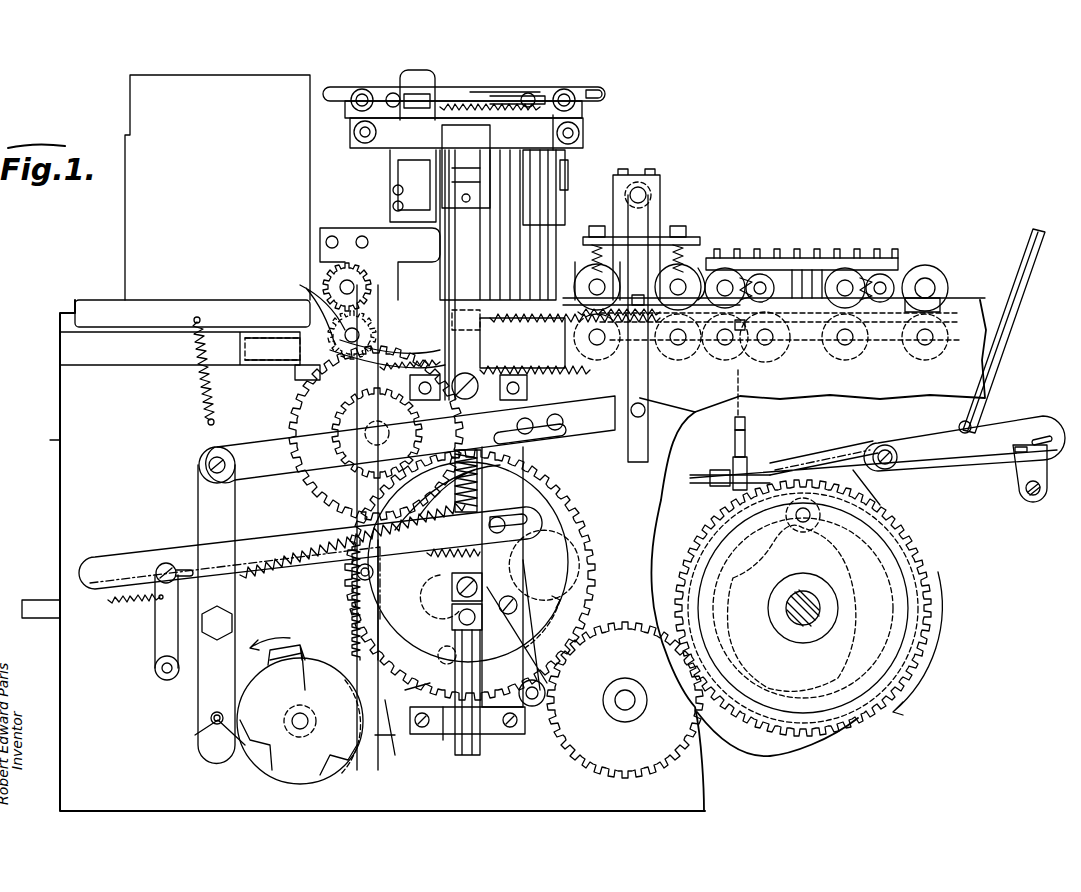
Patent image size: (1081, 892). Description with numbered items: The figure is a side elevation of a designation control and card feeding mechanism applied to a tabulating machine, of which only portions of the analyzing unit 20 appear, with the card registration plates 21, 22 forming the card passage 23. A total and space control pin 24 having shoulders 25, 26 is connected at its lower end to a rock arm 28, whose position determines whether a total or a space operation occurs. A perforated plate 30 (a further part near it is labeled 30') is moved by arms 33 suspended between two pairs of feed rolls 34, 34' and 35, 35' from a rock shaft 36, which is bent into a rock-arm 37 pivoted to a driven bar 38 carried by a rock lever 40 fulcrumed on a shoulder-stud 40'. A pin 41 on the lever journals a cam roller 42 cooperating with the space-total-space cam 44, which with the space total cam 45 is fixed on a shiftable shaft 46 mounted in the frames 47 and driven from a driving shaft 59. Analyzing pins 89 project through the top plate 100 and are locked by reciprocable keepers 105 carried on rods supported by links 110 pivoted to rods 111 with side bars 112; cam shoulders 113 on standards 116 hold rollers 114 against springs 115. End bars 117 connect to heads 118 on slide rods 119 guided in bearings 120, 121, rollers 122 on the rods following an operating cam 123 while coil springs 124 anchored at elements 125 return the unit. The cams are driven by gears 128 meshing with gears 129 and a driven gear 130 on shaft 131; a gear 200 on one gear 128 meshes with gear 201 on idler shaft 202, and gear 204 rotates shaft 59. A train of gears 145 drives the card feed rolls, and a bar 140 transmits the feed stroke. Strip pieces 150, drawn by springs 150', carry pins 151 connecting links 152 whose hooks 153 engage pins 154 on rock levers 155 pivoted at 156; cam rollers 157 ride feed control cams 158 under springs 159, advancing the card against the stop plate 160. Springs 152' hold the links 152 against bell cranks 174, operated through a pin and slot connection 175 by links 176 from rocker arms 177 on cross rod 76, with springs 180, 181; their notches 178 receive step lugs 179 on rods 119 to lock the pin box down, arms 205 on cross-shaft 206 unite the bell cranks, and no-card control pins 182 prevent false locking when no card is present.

The analyzing unit 20 is at (872, 258).
The card registration plate 21 is at (928, 272).
The card registration plate 22 is at (892, 340).
The card passage 23 is at (938, 322).
The total and space control pin 24 is at (745, 410).
The pin shoulder 25 is at (735, 330).
The pin shoulder 26 is at (770, 342).
The rock arm 28 is at (908, 440).
The perforated plate 30 is at (799, 305).
The roller spring 30' is at (940, 291).
The arms 33 is at (661, 210).
The feed roll 34 is at (591, 282).
The feed roll 34' is at (596, 353).
The feed roll 35 is at (687, 268).
The feed roll 35' is at (690, 349).
The rock shaft 36 is at (647, 193).
The rock-arm 37 is at (648, 372).
The driven bar 38 is at (282, 450).
The rock lever 40 is at (288, 527).
The shoulder-stud 40' is at (234, 623).
The pin 41 is at (195, 735).
The cam roller 42 is at (210, 716).
The space-total-space cam 44 is at (302, 652).
The space total cam 45 is at (323, 778).
The shaft 46 is at (302, 717).
The frames 47 is at (44, 441).
The driving shaft 59 is at (425, 690).
The cross rod 76 is at (160, 680).
The pins 89 is at (535, 262).
The top plate 100 is at (560, 208).
The reciprocable keeper 105 is at (606, 92).
The links 110 is at (346, 112).
The rods 111 is at (355, 138).
The side bars 112 is at (485, 92).
The cam shoulders 113 is at (462, 100).
The rollers 114 is at (404, 98).
The springs 115 is at (500, 96).
The standards 116 is at (428, 73).
The end bars 117 is at (466, 132).
The heads 118 is at (466, 166).
The operating slide rods 119 is at (466, 758).
The upper bearings 120 is at (527, 388).
The lower bearings 121 is at (490, 740).
The cam rollers 122 is at (455, 620).
The operating cam 123 is at (555, 524).
The coil springs 124 is at (455, 493).
The anchoring elements 125 is at (452, 585).
The gears 128 is at (572, 508).
The gears 129 is at (612, 684).
The driven gear 130 is at (808, 608).
The shaft 131 is at (820, 608).
The bar 140 is at (35, 598).
The train of gears 145 is at (300, 285).
The strip pieces 150 is at (570, 341).
The springs 150' is at (619, 341).
The projecting pins 151 is at (450, 310).
The links 152 is at (192, 313).
The springs 152' is at (184, 371).
The hooks 153 is at (387, 355).
The pins 154 is at (361, 394).
The rock levers 155 is at (352, 598).
The pivot 156 is at (415, 745).
The cam rollers 157 is at (357, 574).
The feed control cams 158 is at (545, 612).
The springs 159 is at (535, 361).
The stop plate 160 is at (583, 242).
The bell cranks 174 is at (278, 352).
The pin and slot connection 175 is at (560, 540).
The links 176 is at (566, 480).
The rocker arms 177 is at (158, 630).
The notches 178 is at (548, 675).
The step lugs 179 is at (512, 592).
The spring 180 is at (110, 604).
The spring 181 is at (446, 551).
The no-card control pins 182 is at (410, 280).
The gear 200 is at (440, 600).
The gear 201 is at (443, 742).
The idler shaft 202 is at (438, 656).
The gear 204 is at (305, 706).
The arms 205 is at (542, 622).
The cross-shaft 206 is at (547, 694).